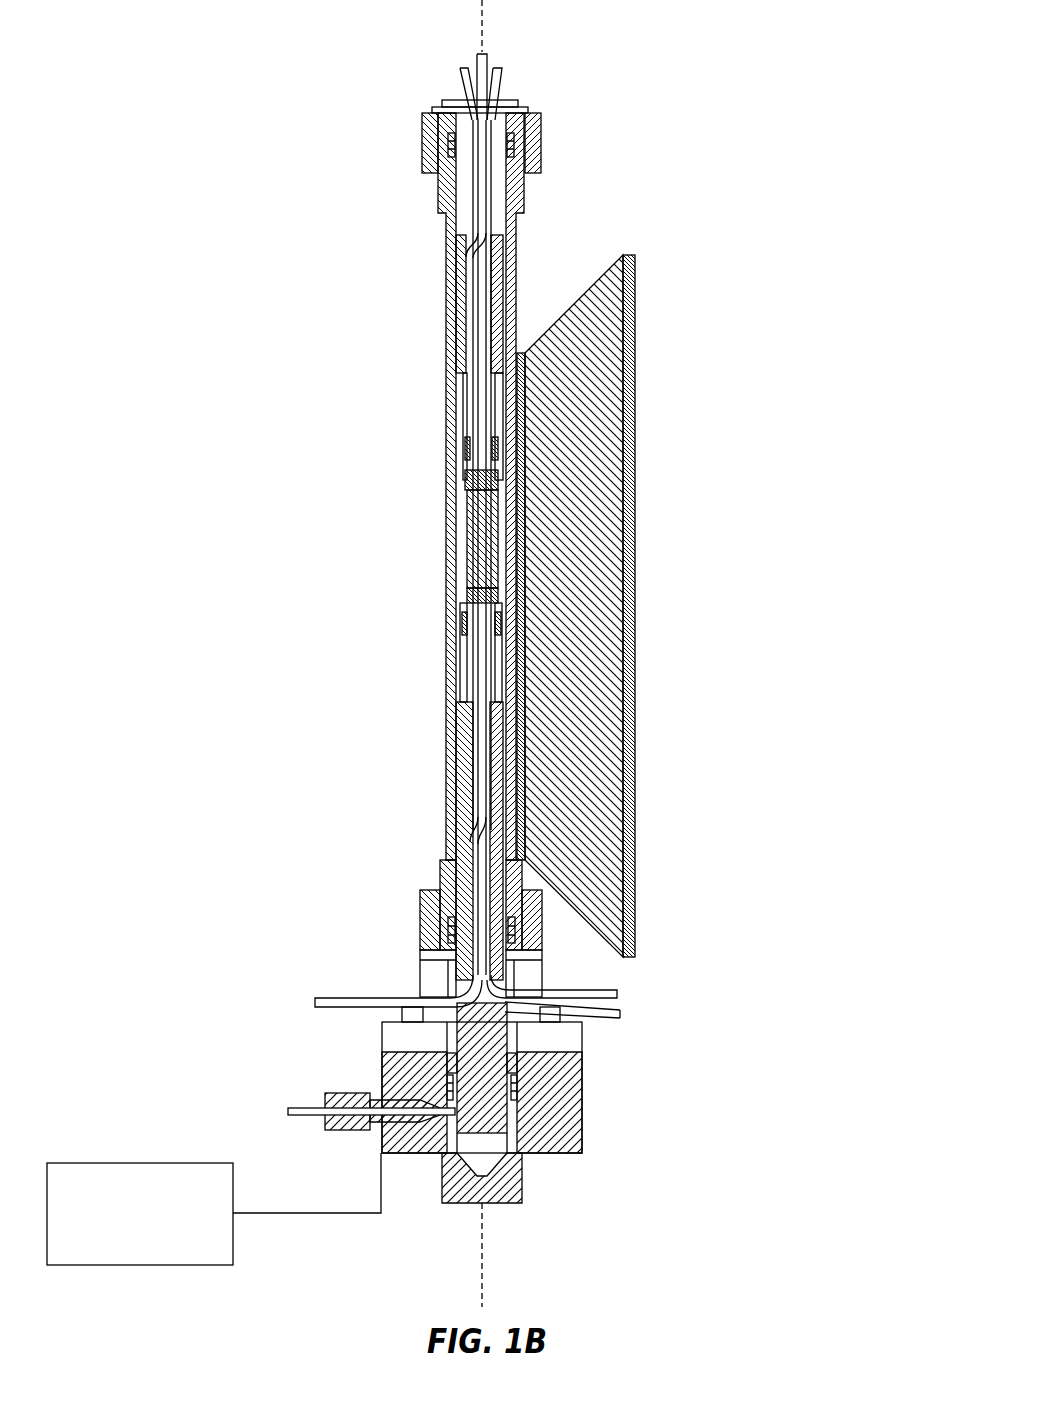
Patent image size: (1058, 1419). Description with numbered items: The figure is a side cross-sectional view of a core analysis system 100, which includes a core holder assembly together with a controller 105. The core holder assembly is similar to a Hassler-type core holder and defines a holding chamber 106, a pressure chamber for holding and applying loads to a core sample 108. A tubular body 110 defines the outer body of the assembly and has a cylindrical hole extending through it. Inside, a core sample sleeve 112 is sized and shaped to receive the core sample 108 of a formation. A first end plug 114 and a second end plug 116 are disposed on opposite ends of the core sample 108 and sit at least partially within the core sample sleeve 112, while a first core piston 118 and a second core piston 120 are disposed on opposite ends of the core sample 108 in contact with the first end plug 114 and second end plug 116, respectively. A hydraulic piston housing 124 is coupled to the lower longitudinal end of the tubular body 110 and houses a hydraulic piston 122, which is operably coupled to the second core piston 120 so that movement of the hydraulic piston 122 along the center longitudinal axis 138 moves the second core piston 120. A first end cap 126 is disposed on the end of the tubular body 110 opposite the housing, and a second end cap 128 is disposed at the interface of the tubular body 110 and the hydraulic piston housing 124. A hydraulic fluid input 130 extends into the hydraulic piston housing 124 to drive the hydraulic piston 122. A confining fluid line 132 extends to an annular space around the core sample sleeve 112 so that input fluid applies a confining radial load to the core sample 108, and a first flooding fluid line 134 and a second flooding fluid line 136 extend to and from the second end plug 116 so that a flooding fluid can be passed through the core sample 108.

The core analysis system 100 is at (802, 146).
The controller 105 is at (145, 1265).
The holding chamber 106 is at (500, 482).
The core sample 108 is at (488, 535).
The tubular body 110 is at (516, 232).
The core sample sleeve 112 is at (516, 406).
The first end plug 114 is at (460, 462).
The second end plug 116 is at (462, 597).
The first core piston 118 is at (462, 332).
The second core piston 120 is at (462, 745).
The hydraulic piston 122 is at (490, 1118).
The hydraulic piston housing 124 is at (575, 1143).
The first end cap 126 is at (430, 160).
The second end cap 128 is at (425, 927).
The hydraulic fluid input 130 is at (325, 1108).
The confining fluid line 132 is at (322, 998).
The first flooding fluid line 134 is at (620, 992).
The second flooding fluid line 136 is at (622, 1014).
The center longitudinal axis 138 is at (484, 8).